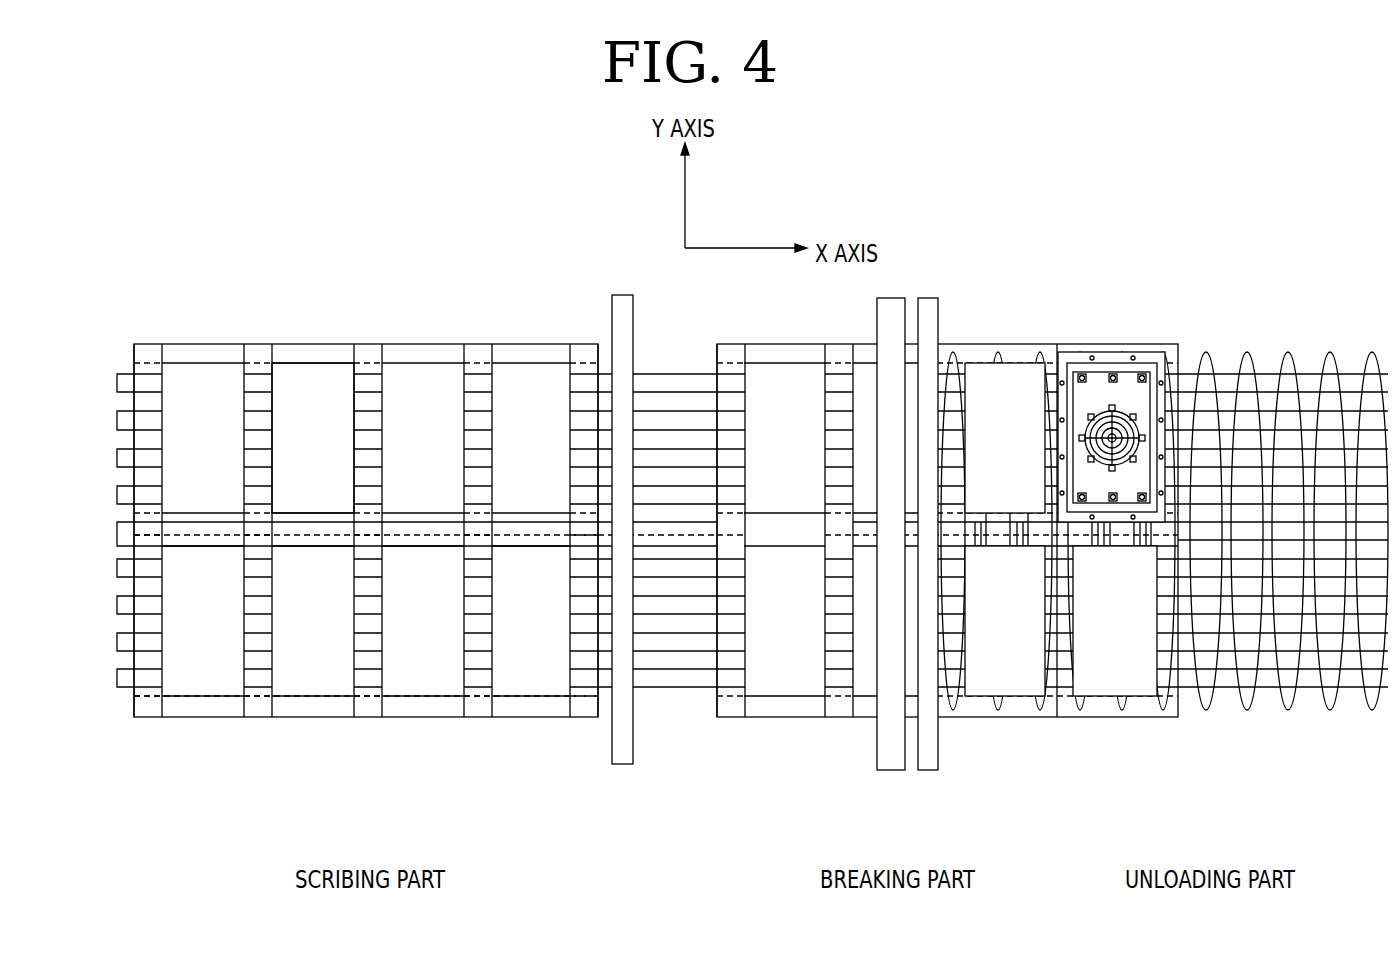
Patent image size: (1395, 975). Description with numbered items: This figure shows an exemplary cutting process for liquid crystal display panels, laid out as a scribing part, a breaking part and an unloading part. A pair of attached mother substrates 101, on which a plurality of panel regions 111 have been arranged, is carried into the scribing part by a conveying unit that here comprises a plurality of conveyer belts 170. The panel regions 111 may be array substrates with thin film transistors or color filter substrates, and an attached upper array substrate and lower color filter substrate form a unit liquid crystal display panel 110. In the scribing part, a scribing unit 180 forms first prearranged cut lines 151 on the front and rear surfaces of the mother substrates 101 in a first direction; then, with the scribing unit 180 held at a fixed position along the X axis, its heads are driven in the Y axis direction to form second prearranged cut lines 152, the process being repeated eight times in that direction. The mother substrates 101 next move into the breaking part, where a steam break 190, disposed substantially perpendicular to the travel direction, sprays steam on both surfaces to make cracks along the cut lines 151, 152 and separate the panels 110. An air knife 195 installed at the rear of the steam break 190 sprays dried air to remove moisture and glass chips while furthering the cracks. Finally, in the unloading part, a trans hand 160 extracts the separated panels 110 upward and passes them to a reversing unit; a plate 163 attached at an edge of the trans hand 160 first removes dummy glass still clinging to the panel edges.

The mother substrates 101 is at (201, 344).
The unit liquid crystal display panel 110 is at (313, 363).
The panel regions 111 is at (326, 450).
The first prearranged cut lines 151 is at (142, 717).
The second prearranged cut lines 152 is at (163, 707).
The conveyer belts 170 is at (117, 642).
The scribing unit 180 is at (619, 764).
The steam break 190 is at (891, 770).
The air knife 195 is at (928, 770).
The trans hand 160 is at (1092, 395).
The plate 163 is at (1128, 375).